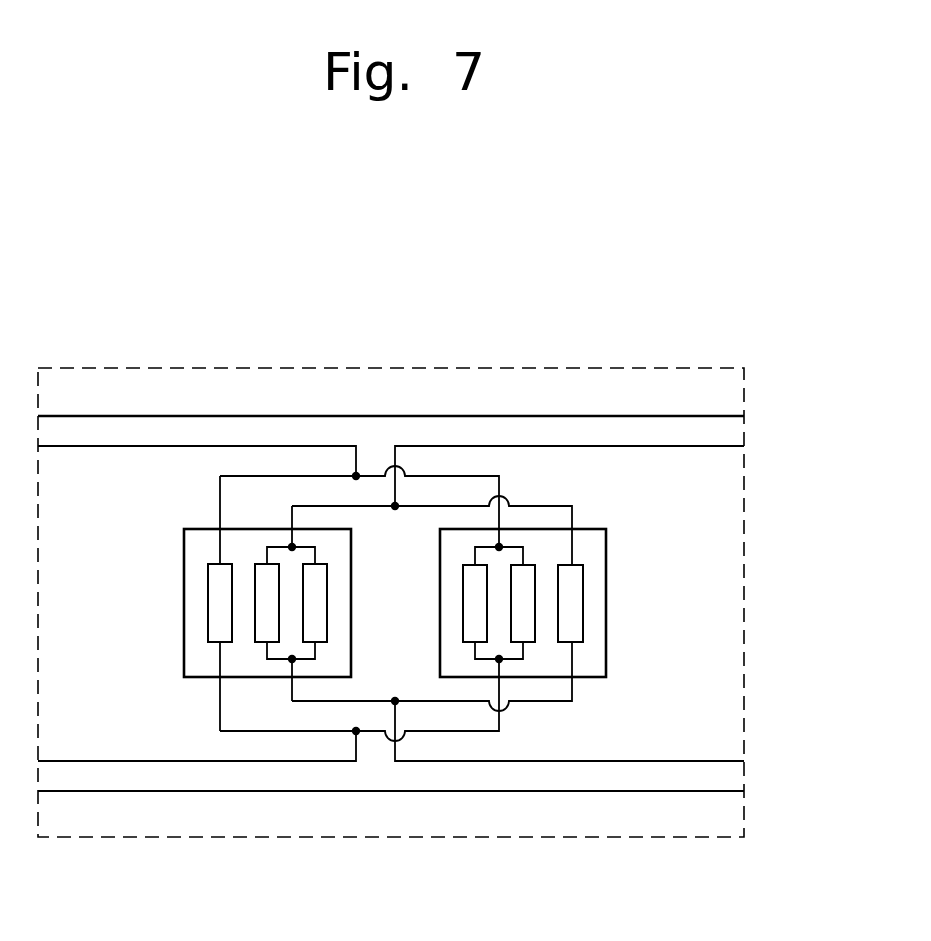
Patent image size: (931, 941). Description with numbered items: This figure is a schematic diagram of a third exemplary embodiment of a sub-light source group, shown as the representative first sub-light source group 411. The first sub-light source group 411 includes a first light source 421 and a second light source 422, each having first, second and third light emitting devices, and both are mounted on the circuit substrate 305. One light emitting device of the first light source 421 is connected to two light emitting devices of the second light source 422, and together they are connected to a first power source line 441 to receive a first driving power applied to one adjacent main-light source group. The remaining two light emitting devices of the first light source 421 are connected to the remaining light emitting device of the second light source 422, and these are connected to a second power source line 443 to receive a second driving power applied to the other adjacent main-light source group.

The circuit substrate 305 is at (708, 406).
The first sub-light source group 411 is at (447, 366).
The first light source 421 is at (230, 717).
The second light source 422 is at (560, 717).
The first power source line 441 is at (182, 446).
The second power source line 443 is at (603, 446).